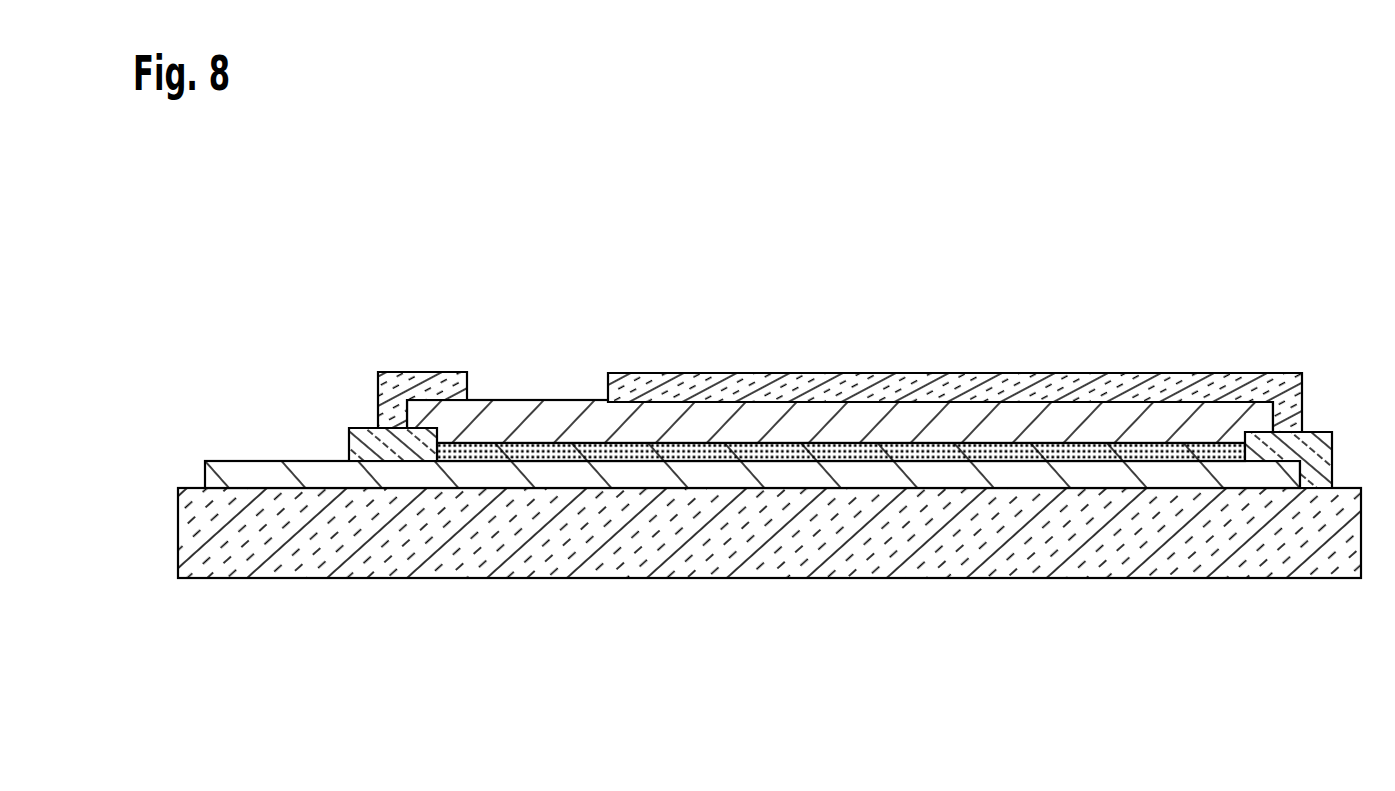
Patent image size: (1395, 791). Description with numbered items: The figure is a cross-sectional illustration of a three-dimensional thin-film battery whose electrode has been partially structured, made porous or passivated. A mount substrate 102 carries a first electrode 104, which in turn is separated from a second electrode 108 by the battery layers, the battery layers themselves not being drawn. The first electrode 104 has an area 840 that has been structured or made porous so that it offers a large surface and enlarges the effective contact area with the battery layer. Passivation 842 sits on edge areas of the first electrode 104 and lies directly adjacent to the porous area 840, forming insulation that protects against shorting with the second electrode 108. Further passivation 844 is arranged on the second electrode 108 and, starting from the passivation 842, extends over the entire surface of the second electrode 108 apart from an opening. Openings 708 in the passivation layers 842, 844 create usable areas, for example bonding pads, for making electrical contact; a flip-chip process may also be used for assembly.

The mount substrate 102 is at (708, 567).
The first electrode 104 is at (457, 476).
The second electrode 108 is at (537, 407).
The opening 708 is at (282, 408).
The area which has been structured and/or made porous 840 is at (935, 447).
The passivation 842 is at (1327, 436).
The further passivation 844 is at (817, 378).